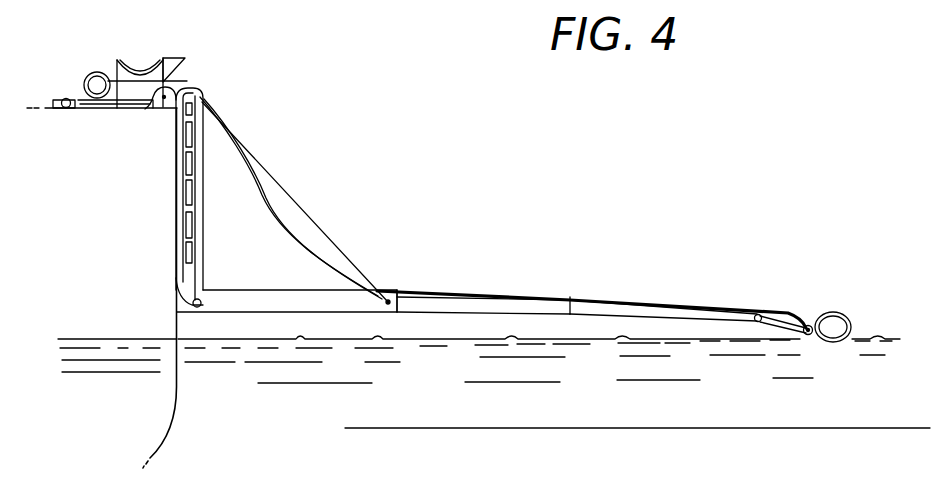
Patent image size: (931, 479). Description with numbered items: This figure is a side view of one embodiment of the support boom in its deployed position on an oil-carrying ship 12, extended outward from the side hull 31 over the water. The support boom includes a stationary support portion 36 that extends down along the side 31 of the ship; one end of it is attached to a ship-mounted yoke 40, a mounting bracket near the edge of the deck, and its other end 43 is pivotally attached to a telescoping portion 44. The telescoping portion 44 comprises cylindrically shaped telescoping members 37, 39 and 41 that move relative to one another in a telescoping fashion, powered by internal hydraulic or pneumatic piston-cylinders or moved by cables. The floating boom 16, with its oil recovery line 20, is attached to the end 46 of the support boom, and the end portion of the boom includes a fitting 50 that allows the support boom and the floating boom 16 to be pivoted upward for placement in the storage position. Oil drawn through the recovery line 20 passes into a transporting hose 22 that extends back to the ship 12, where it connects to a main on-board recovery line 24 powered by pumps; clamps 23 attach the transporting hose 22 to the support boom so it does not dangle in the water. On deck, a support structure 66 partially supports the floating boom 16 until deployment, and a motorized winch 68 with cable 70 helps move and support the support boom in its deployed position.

The ship 12 is at (102, 288).
The floating boom 16 is at (838, 310).
The recovery line 20 is at (811, 340).
The transporting hose 22 is at (662, 302).
The clamp 23 is at (394, 292).
The main on-board recovery line 24 is at (56, 109).
The side hull 31 is at (181, 319).
The stationary support portion 36 is at (197, 152).
The telescoping member 37 is at (236, 297).
The telescoping member 39 is at (466, 308).
The ship-mounted yoke 40 is at (157, 108).
The telescoping member 41 is at (693, 316).
The other end of stationary support portion 43 is at (193, 303).
The telescoping portion 44 is at (520, 303).
The end of support boom 46 is at (807, 324).
The fitting 50 is at (756, 314).
The support structure 66 is at (147, 66).
The motorized winch 68 is at (95, 70).
The cable 70 is at (297, 199).